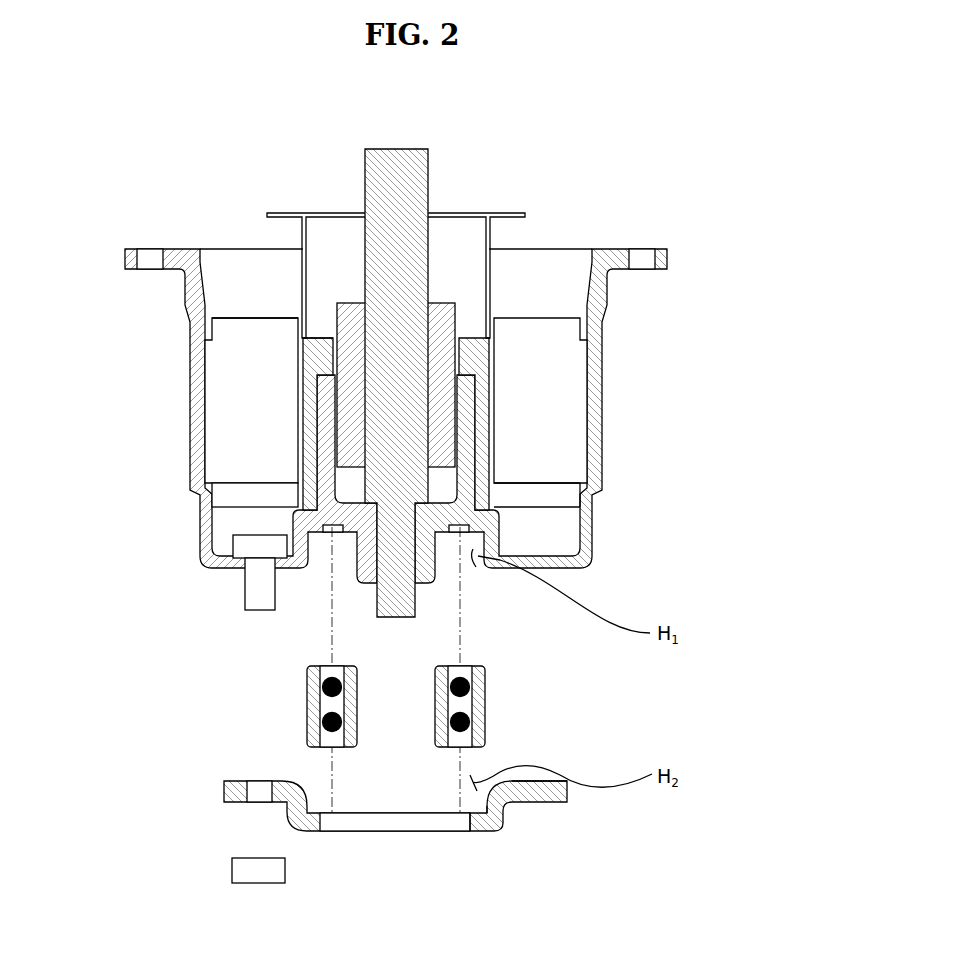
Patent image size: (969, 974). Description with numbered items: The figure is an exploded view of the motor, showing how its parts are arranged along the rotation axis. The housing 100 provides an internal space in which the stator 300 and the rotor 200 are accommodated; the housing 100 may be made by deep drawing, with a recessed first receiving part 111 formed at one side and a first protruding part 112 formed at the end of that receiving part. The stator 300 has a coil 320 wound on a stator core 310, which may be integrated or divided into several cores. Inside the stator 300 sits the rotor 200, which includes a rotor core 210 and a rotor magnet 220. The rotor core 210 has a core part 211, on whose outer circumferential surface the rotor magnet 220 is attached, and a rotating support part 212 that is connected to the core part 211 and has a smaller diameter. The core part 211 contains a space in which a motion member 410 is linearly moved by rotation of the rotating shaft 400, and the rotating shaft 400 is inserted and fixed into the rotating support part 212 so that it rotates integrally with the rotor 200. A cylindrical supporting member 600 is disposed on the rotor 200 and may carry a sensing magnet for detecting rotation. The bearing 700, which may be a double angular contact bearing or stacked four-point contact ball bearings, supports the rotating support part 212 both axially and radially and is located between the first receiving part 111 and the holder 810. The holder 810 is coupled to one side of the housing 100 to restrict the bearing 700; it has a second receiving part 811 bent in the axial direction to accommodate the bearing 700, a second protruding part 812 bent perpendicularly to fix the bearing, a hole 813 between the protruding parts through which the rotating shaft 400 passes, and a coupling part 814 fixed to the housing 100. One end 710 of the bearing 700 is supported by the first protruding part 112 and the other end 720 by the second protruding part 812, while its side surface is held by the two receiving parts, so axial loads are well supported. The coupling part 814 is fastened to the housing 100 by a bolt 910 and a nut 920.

The housing 100 is at (607, 293).
The first receiving part 111 is at (498, 520).
The first protruding part 112 is at (498, 507).
The rotor 200 is at (82, 382).
The rotor core 210 is at (148, 523).
The core part 211 is at (323, 432).
The rotating support part 212 is at (340, 504).
The rotor magnet 220 is at (316, 368).
The stator 300 is at (742, 368).
The stator core 310 is at (578, 413).
The coil 320 is at (572, 325).
The rotating shaft 400 is at (390, 443).
The motion member 410 is at (442, 448).
The supporting member 600 is at (503, 213).
The bearing 700 is at (469, 710).
The one end of the bearing 710 is at (485, 670).
The other end of the bearing 720 is at (485, 740).
The holder 810 is at (411, 860).
The second receiving part 811 is at (500, 807).
The second protruding part 812 is at (487, 823).
The hole 813 is at (447, 823).
The coupling part 814 is at (553, 835).
The bolt 910 is at (243, 547).
The nut 920 is at (232, 870).